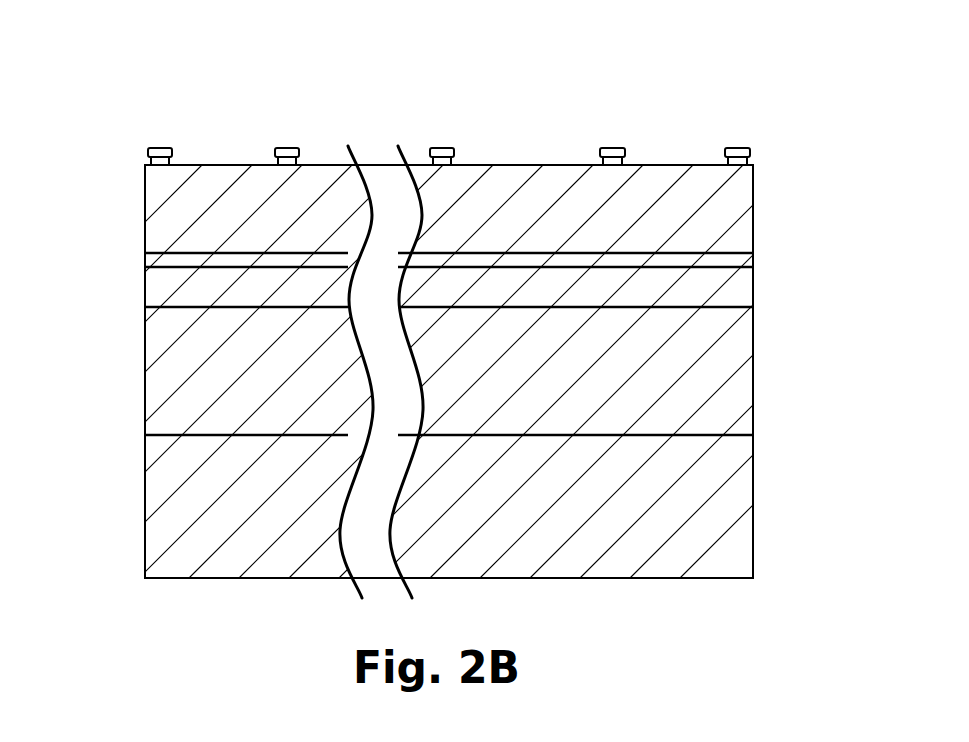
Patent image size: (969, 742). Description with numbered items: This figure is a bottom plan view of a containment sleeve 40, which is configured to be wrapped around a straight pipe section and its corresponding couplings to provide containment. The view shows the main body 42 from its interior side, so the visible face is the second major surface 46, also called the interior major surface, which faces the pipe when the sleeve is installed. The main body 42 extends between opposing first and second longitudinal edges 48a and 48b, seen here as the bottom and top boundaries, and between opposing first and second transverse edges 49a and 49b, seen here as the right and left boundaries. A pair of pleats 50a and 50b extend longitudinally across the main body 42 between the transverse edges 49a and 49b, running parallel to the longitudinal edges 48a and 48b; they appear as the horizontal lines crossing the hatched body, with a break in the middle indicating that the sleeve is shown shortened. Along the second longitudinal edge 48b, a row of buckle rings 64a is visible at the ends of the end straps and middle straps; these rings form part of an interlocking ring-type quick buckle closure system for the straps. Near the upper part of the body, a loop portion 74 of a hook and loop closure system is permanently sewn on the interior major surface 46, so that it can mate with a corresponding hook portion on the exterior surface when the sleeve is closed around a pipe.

The containment sleeve 40 is at (789, 88).
The main body 42 is at (760, 537).
The second major surface 46 is at (501, 188).
The first longitudinal edge 48a is at (604, 584).
The second longitudinal edge 48b is at (218, 158).
The first transverse edge 49a is at (760, 368).
The second transverse edge 49b is at (138, 407).
The pleat 50a is at (215, 317).
The pleat 50b is at (208, 442).
The buckle rings 64a is at (159, 147).
The loop portion 74 is at (742, 259).